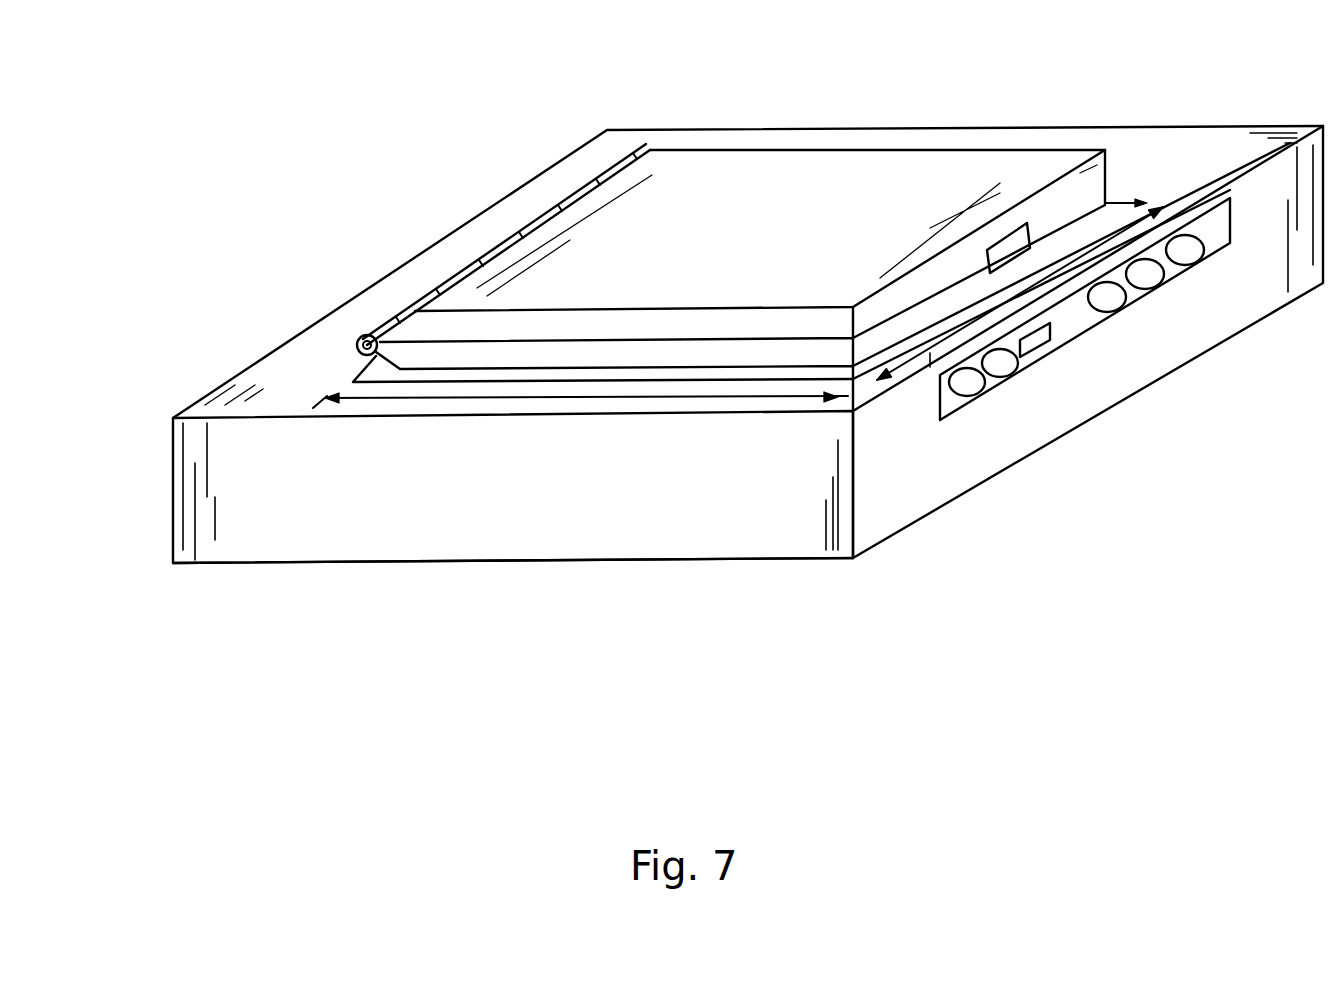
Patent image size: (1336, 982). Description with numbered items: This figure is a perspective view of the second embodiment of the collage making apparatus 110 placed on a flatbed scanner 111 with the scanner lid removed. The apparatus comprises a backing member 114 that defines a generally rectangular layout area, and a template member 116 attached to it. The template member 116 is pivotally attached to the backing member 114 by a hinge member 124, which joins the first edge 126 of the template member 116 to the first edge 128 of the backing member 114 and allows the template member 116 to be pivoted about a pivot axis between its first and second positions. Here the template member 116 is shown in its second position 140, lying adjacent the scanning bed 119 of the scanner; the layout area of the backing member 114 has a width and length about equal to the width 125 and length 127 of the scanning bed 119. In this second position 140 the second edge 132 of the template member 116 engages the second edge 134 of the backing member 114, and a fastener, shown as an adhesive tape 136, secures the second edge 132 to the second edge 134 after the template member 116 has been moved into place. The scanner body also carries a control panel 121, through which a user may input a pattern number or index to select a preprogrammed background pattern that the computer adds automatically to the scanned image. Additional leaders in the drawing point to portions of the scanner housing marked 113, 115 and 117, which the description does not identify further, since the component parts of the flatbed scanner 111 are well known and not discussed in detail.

The collage making apparatus 110 is at (482, 262).
The flatbed scanner 111 is at (258, 570).
The side wall 113 is at (735, 565).
The backing member 114 is at (791, 239).
The top wall 115 is at (173, 416).
The template member 116 is at (480, 357).
The bottom edge 117 is at (483, 563).
The scanning bed 119 is at (1135, 197).
The control panel 121 is at (1108, 316).
The hinge member 124 is at (357, 340).
The width 125 is at (925, 355).
The first edge 126 is at (378, 358).
The length 127 is at (665, 398).
The first edge 128 is at (380, 327).
The second edge 132 is at (1133, 194).
The second edge 134 is at (1192, 88).
The adhesive tape 136 is at (1017, 223).
The second position 140 is at (827, 353).